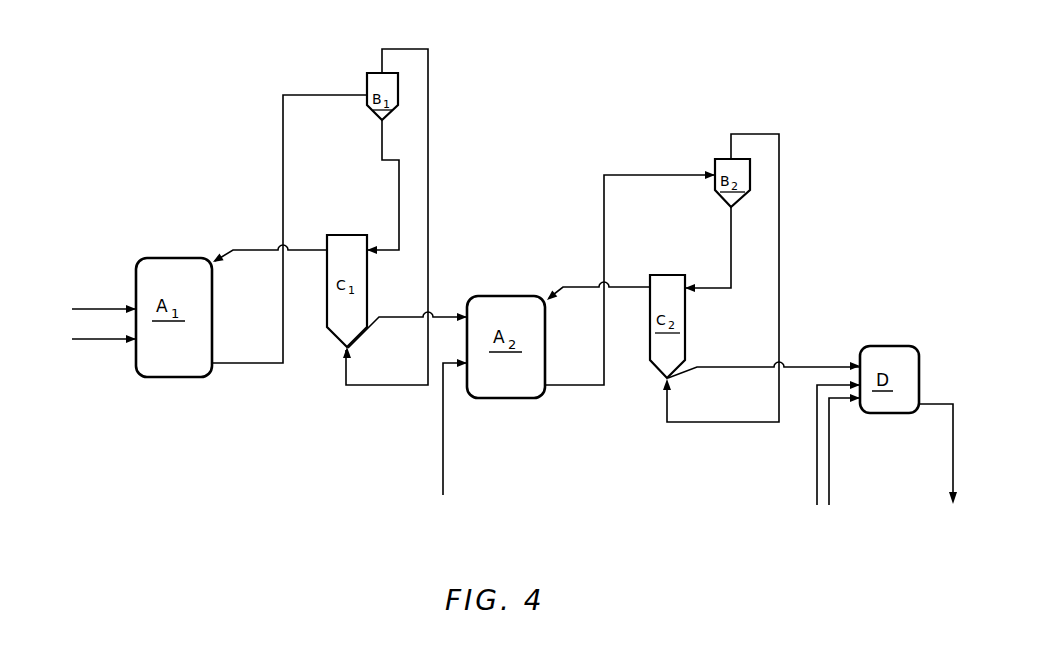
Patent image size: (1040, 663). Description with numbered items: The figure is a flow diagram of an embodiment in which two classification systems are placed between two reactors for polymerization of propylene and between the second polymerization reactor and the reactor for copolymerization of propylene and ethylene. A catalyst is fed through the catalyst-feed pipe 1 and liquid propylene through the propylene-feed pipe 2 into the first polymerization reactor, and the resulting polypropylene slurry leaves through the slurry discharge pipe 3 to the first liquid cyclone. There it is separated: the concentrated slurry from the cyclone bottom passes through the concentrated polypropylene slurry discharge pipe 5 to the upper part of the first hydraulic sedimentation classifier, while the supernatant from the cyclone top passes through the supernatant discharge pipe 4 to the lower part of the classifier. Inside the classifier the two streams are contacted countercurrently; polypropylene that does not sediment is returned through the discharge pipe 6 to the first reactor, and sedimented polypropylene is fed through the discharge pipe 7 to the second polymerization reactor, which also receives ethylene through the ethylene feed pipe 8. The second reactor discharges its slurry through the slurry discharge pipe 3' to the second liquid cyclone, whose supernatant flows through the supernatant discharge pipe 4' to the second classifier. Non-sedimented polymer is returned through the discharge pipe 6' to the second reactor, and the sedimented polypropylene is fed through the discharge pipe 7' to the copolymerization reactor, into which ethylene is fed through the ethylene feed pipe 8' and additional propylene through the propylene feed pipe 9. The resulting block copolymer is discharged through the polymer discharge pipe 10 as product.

The catalyst-feed pipe 1 is at (100, 309).
The propylene-feed pipe 2 is at (100, 339).
The slurry discharge pipe 3 is at (289, 229).
The supernatant discharge pipe 4 is at (405, 217).
The concentrated polypropylene slurry discharge pipe 5 is at (382, 153).
The discharge pipe of hydraulic sedimentation classifier 6 is at (270, 232).
The discharge pipe of hydraulic sedimentation classifier 7 is at (407, 305).
The ethylene feed pipe 8 is at (421, 427).
The slurry discharge pipe 3' is at (630, 258).
The supernatant discharge pipe 4' is at (740, 278).
The discharge pipe of hydraulic sedimentation classifier 6' is at (598, 262).
The discharge pipe of hydraulic sedimentation classifier 7' is at (764, 351).
The ethylene feed pipe 8' is at (805, 443).
The propylene feed pipe 9 is at (829, 460).
The polymer discharge pipe 10 is at (953, 470).